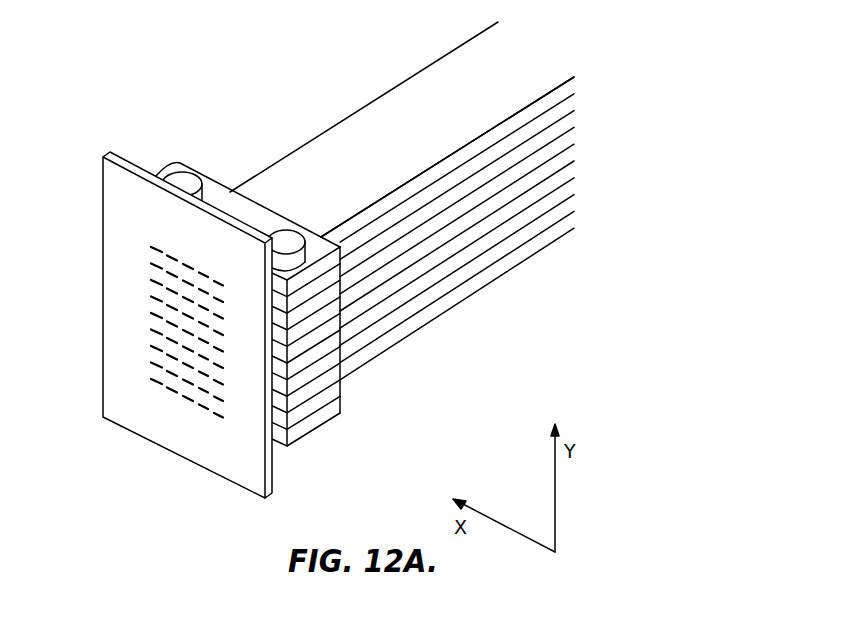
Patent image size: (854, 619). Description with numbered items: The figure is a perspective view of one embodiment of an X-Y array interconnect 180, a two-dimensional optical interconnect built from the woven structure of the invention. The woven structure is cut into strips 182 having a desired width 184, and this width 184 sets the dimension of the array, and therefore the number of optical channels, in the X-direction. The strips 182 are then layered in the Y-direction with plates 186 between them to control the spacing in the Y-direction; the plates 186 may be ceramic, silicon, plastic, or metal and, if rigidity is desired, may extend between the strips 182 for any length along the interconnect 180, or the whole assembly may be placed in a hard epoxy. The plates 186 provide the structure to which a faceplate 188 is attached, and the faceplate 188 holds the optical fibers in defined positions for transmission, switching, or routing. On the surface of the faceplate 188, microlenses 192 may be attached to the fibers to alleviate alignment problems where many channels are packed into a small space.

The X-Y array interconnect 180 is at (71, 31).
The strips 182 is at (398, 102).
The width 184 is at (394, 191).
The plates 186 is at (332, 397).
The faceplate 188 is at (131, 203).
The microlenses 192 is at (152, 344).